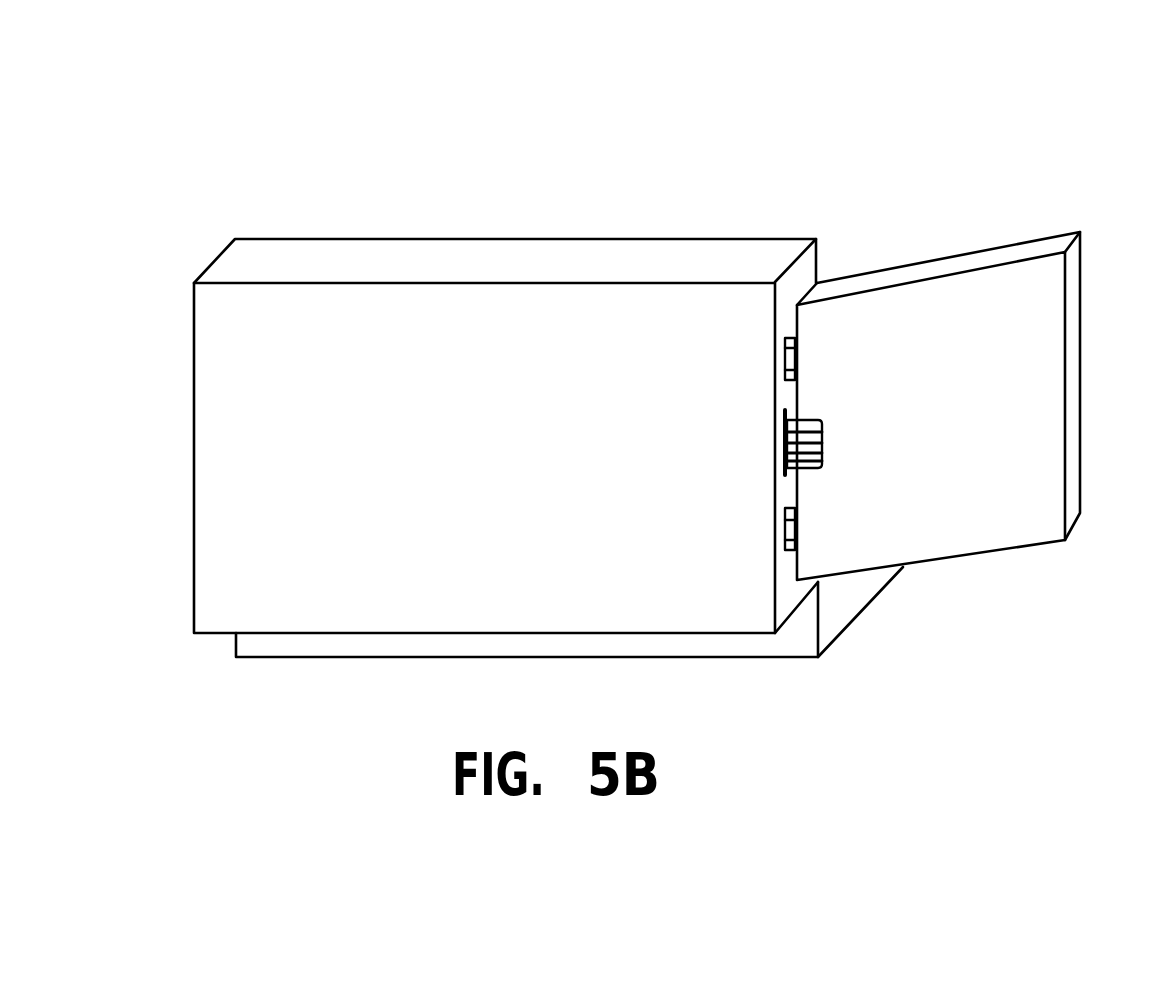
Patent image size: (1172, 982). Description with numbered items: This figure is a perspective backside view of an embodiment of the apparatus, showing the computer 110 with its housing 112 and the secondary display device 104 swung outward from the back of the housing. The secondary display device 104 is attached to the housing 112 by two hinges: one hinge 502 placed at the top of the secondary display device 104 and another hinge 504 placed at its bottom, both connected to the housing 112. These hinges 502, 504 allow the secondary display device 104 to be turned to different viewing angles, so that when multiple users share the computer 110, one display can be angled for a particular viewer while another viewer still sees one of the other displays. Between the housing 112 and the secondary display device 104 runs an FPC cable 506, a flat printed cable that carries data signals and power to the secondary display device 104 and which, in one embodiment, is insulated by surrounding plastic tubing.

The secondary display device 104 is at (953, 262).
The computer 110 is at (850, 595).
The housing 112 is at (448, 255).
The hinge 502 is at (785, 360).
The hinge 504 is at (785, 528).
The FPC cable 506 is at (803, 417).